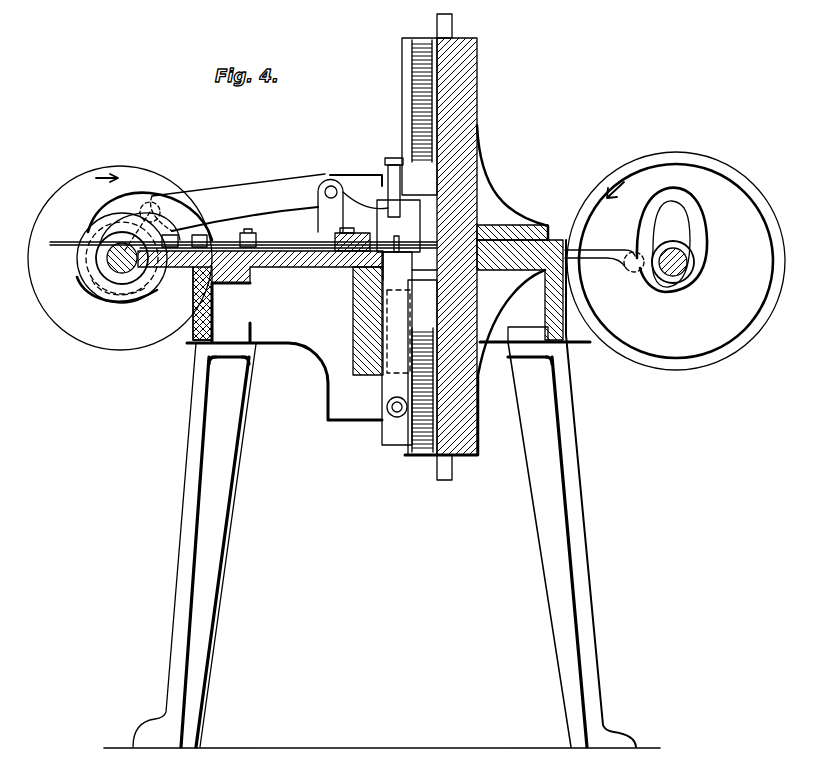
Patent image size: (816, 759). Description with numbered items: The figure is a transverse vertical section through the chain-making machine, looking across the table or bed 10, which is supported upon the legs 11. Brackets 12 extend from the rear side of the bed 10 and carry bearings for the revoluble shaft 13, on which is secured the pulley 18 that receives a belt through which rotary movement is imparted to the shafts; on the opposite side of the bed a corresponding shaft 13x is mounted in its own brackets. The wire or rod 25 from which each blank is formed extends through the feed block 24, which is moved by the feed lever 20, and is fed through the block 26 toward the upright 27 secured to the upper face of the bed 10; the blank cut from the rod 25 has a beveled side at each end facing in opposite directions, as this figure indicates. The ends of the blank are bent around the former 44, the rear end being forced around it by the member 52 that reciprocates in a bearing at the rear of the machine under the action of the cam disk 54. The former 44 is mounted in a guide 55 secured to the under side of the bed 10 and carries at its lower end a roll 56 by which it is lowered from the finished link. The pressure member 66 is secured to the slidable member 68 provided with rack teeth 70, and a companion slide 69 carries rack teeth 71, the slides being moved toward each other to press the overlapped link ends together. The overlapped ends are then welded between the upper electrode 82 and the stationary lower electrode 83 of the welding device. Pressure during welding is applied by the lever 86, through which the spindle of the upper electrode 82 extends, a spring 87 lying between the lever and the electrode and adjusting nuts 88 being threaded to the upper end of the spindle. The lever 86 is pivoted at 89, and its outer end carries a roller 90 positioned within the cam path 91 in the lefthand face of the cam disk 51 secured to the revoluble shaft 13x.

The table or bed 10 is at (300, 257).
The legs 11 is at (183, 567).
The brackets 12 is at (590, 335).
The revoluble shaft 13 is at (674, 273).
The revoluble shaft 13x is at (117, 266).
The pulley 18 is at (738, 173).
The feed lever 20 is at (258, 231).
The feed block 24 is at (267, 252).
The wire or rod 25 is at (63, 243).
The block 26 is at (343, 263).
The upright 27 is at (465, 78).
The former 44 is at (357, 288).
The cam disk 51 is at (40, 208).
The bending member 52 is at (598, 250).
The cam disk 54 is at (733, 327).
The guide 55 is at (361, 357).
The roll 56 is at (392, 423).
The pressure member 66 is at (398, 182).
The slidable member 68 is at (403, 52).
The slidable member 69 is at (415, 455).
The rack teeth 70 is at (422, 42).
The rack teeth 71 is at (426, 460).
The upper electrode 82 is at (412, 215).
The lower electrode 83 is at (418, 268).
The lever 86 is at (232, 200).
The spring 87 is at (364, 190).
The adjusting nuts 88 is at (392, 160).
The pivot 89 is at (328, 188).
The roller 90 is at (133, 200).
The cam path 91 is at (82, 155).